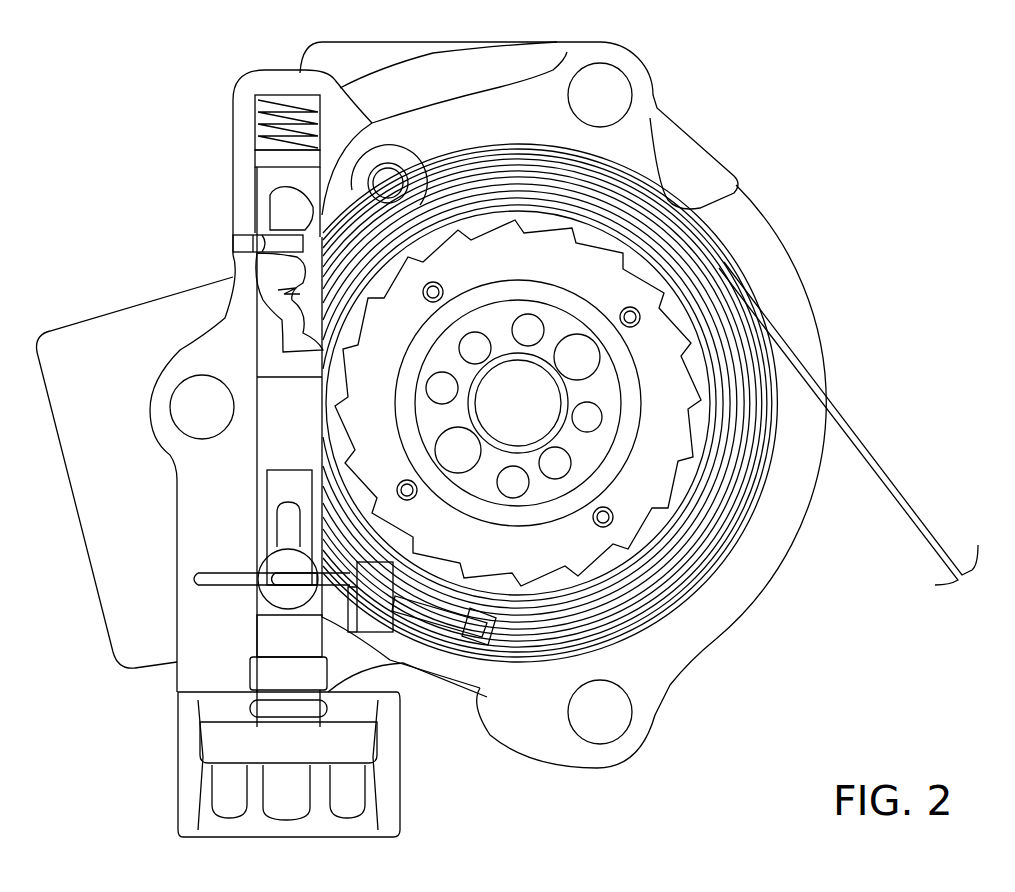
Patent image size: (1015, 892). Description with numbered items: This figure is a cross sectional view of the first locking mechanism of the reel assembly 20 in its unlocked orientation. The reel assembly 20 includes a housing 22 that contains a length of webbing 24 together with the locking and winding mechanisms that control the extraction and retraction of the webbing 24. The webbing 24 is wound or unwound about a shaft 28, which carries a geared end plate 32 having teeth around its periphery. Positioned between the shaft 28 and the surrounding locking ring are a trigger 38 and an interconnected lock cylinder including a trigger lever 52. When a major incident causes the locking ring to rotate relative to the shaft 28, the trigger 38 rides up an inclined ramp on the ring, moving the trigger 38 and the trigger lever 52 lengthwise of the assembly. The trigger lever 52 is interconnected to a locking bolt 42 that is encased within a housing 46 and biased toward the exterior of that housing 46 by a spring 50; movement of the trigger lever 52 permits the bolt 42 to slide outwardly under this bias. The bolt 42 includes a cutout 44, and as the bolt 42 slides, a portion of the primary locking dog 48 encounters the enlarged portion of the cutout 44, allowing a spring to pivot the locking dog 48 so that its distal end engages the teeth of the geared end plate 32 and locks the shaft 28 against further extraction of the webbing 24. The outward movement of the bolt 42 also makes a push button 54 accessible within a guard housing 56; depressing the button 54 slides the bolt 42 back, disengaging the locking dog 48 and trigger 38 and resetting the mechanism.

The reel assembly 20 is at (770, 128).
The housing 22 is at (197, 288).
The webbing 24 is at (668, 570).
The shaft 28 is at (610, 357).
The geared end plate 32 is at (612, 283).
The trigger 38 is at (262, 580).
The locking bolt 42 is at (270, 452).
The cutout 44 is at (278, 197).
The housing 46 is at (277, 672).
The primary locking dog 48 is at (290, 288).
The spring 50 is at (295, 97).
The trigger lever 52 is at (285, 598).
The push button 54 is at (325, 745).
The guard housing 56 is at (385, 822).